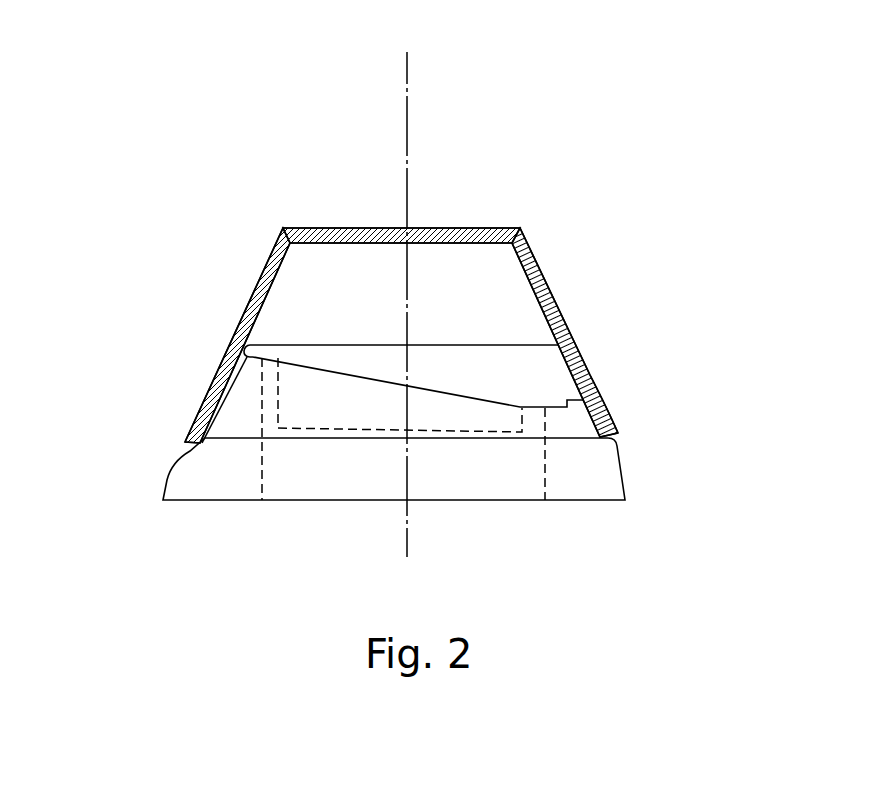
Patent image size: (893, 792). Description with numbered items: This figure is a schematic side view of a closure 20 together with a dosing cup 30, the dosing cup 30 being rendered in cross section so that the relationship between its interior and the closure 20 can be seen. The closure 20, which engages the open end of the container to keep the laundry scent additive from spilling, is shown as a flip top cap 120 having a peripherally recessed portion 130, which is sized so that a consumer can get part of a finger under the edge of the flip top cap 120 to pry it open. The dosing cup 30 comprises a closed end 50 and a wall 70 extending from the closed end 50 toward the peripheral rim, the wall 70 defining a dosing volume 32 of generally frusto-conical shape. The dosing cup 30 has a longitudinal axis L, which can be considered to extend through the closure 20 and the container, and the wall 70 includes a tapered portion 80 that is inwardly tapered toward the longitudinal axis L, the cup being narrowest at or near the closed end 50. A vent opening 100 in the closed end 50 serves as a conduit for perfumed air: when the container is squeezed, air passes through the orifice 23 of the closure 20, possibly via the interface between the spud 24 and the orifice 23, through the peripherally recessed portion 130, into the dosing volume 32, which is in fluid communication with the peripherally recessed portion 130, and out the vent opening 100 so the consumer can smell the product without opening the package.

The longitudinal axis L is at (408, 108).
The vent opening 100 is at (413, 217).
The dosing cup 30 is at (501, 228).
The closed end 50 is at (360, 228).
The wall 70 is at (546, 283).
The tapered portion 80 is at (210, 383).
The dosing volume 32 is at (450, 289).
The flip top cap 120 is at (537, 378).
The peripherally recessed portion 130 is at (227, 386).
The closure 20 is at (623, 470).
The spud 24 is at (262, 405).
The orifice 23 is at (392, 460).